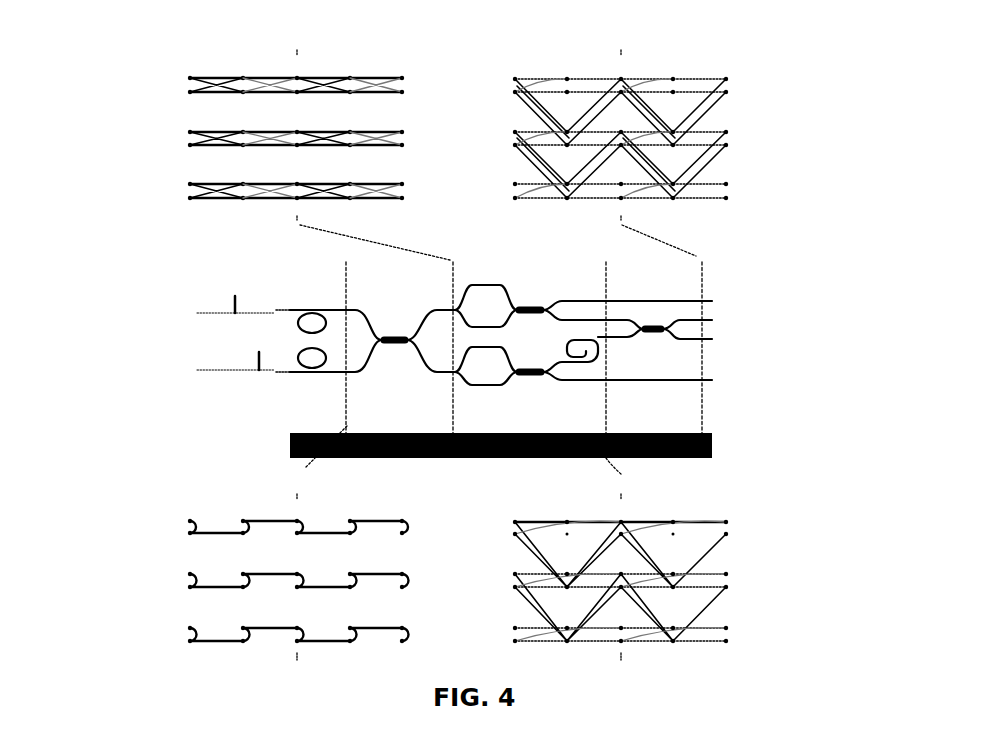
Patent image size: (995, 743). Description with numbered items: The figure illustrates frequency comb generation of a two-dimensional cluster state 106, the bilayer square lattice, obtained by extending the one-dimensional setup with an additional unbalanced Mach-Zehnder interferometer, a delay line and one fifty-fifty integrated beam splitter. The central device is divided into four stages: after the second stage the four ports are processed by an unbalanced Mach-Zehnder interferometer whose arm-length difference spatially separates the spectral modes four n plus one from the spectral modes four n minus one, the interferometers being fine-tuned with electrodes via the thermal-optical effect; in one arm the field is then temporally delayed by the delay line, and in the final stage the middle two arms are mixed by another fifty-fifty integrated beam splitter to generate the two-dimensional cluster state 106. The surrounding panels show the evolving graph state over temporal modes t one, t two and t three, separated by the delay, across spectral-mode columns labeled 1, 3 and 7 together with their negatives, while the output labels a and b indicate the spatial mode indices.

The 2D cluster state 106 is at (74, 108).
The lattice position 1 is at (190, 118).
The lattice position 3 is at (243, 118).
The lattice position 7 is at (350, 118).